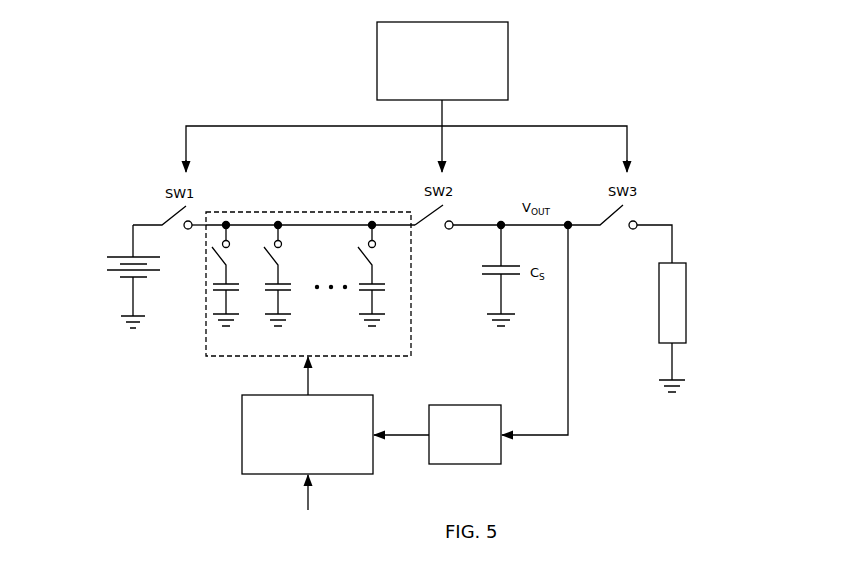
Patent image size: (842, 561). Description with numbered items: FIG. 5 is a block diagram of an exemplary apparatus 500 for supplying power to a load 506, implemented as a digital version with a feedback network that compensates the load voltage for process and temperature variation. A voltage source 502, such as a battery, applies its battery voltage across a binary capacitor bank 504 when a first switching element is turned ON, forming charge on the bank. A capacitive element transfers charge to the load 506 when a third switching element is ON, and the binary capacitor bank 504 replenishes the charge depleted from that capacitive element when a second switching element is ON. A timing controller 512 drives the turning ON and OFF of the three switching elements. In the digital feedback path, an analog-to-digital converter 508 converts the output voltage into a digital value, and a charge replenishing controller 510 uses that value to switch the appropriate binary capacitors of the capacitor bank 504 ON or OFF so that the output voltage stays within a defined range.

The apparatus 500 is at (647, 75).
The voltage source 502 is at (121, 255).
The binary capacitor bank 504 is at (314, 212).
The load 506 is at (681, 262).
The analog-to-digital converter (ADC) 508 is at (468, 405).
The charge replenishing controller 510 is at (242, 433).
The timing controller 512 is at (377, 57).